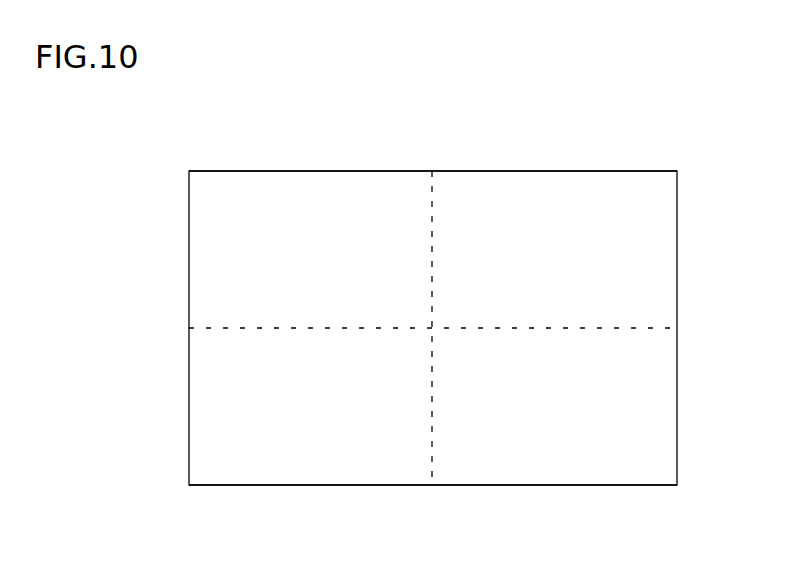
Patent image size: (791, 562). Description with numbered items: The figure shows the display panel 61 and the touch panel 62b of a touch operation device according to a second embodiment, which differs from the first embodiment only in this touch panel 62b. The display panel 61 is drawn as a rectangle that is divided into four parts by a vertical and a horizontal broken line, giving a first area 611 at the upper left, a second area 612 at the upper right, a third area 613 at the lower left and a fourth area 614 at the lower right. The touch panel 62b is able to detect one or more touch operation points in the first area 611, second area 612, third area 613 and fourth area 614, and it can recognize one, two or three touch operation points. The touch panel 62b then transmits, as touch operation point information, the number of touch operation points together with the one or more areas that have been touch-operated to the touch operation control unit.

The display panel 61 is at (433, 305).
The touch panel 62b is at (597, 184).
The first area 611 is at (266, 182).
The second area 612 is at (489, 183).
The third area 613 is at (288, 470).
The fourth area 614 is at (553, 470).